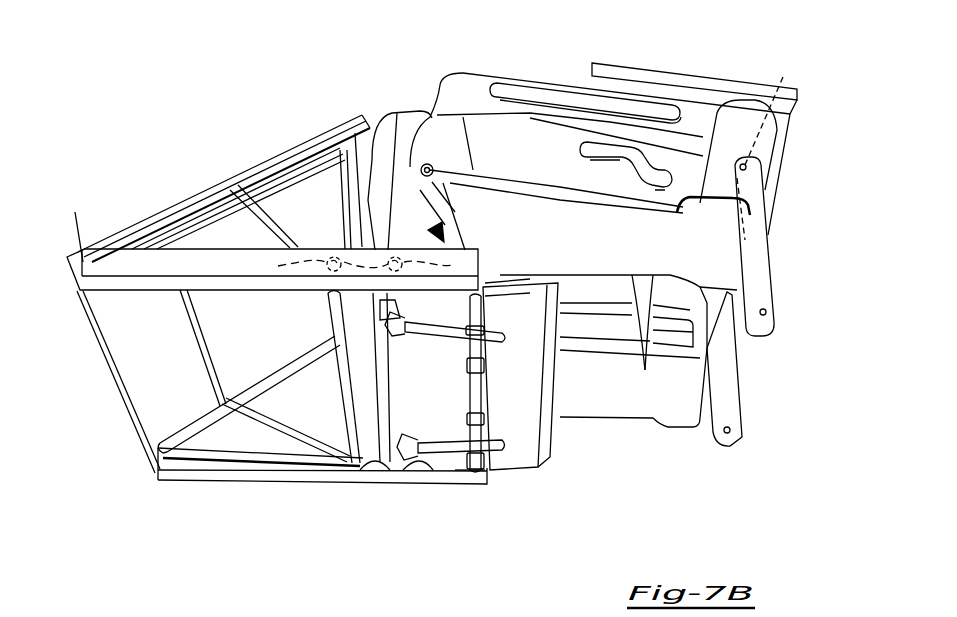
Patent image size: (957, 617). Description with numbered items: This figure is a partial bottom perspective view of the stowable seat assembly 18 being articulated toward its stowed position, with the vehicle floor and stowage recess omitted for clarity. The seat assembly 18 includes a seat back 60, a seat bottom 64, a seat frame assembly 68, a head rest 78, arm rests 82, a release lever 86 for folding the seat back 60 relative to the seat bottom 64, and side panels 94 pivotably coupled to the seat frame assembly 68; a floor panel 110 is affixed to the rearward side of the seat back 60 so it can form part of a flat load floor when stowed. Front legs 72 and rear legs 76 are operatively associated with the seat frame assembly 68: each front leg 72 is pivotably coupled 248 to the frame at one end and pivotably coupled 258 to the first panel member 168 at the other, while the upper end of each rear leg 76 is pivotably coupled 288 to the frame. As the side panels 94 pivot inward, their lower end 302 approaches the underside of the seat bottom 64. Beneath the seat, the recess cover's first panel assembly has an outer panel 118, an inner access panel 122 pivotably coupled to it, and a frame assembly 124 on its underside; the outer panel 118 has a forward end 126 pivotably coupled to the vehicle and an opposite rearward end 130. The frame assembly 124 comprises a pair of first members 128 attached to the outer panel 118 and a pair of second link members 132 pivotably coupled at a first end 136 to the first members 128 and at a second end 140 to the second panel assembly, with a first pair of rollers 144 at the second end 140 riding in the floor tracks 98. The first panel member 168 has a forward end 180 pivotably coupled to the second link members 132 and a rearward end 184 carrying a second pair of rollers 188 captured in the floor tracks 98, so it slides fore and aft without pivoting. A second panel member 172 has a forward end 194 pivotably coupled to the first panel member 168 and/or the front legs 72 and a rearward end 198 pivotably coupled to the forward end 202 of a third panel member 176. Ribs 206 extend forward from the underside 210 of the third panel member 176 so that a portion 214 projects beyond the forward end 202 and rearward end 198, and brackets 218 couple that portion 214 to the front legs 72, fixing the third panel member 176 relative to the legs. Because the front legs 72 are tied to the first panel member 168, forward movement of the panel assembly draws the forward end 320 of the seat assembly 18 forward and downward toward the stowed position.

The seat assembly 18 is at (735, 52).
The seat back 60 is at (465, 74).
The seat bottom 64 is at (460, 121).
The seat frame assembly 68 is at (436, 228).
The front legs 72 is at (432, 233).
The rear legs 76 is at (778, 242).
The head rest 78 is at (398, 113).
The arm rests 82 is at (542, 88).
The release lever 86 is at (587, 142).
The side panels 94 is at (636, 242).
The floor tracks 98 is at (153, 516).
The floor panel 110 is at (634, 68).
The outer panel 118 is at (173, 355).
The inner access panel 122 is at (257, 360).
The frame assembly 124 is at (192, 244).
The forward end 126 is at (104, 352).
The first members 128 is at (176, 226).
The rearward end 130 is at (370, 148).
The second link members 132 is at (263, 220).
The first end 136 is at (233, 190).
The second end 140 is at (342, 470).
The first pair of rollers 144 is at (272, 269).
The first panel member 168 is at (383, 455).
The second panel member 172 is at (483, 414).
The third panel member 176 is at (485, 395).
The forward end 180 is at (328, 300).
The rearward end 184 is at (418, 462).
The second pair of rollers 188 is at (459, 265).
The forward end 194 is at (390, 380).
The rearward end 198 is at (457, 462).
The forward end 202 is at (525, 390).
The structural members or ribs 206 is at (510, 290).
The underside 210 is at (535, 374).
The portion 214 is at (460, 347).
The brackets 218 is at (427, 340).
The pivotable coupling 248 is at (437, 170).
The pivotable coupling 258 is at (383, 352).
The pivotable coupling 288 is at (750, 145).
The lower end 302 is at (645, 371).
The forward end 320 is at (358, 121).